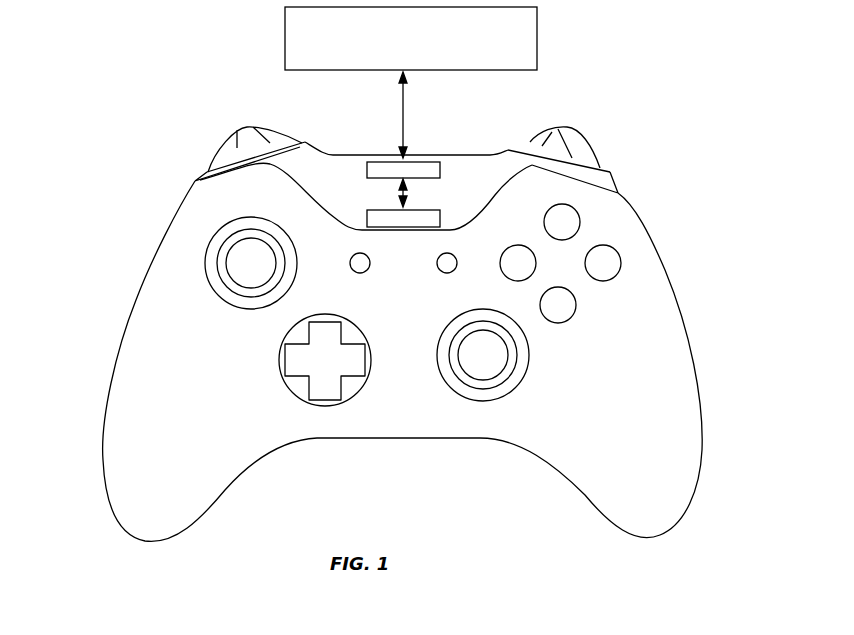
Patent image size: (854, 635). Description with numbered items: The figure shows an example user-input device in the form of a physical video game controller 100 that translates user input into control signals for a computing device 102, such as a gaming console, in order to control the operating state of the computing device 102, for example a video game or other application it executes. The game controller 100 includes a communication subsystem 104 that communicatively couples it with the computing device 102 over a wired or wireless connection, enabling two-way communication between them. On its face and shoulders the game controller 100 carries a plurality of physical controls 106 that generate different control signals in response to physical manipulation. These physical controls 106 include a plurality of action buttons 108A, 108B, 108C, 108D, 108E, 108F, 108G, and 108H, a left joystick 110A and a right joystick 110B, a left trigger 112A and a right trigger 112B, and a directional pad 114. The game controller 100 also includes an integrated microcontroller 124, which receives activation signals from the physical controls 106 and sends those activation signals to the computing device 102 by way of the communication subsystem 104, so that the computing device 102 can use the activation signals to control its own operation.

The game controller 100 is at (124, 100).
The computing device 102 is at (411, 82).
The communication subsystem 104 is at (435, 167).
The physical controls 106 is at (662, 218).
The action button 108A is at (200, 171).
The action button 108B is at (607, 169).
The action button 108C is at (509, 270).
The action button 108D is at (561, 316).
The action button 108E is at (607, 276).
The action button 108F is at (550, 222).
The action button 108G is at (356, 270).
The action button 108H is at (443, 270).
The left joystick 110A is at (233, 293).
The right joystick 110B is at (507, 377).
The left trigger 112A is at (259, 127).
The right trigger 112B is at (549, 131).
The directional pad 114 is at (357, 365).
The integrated microcontroller 124 is at (370, 212).